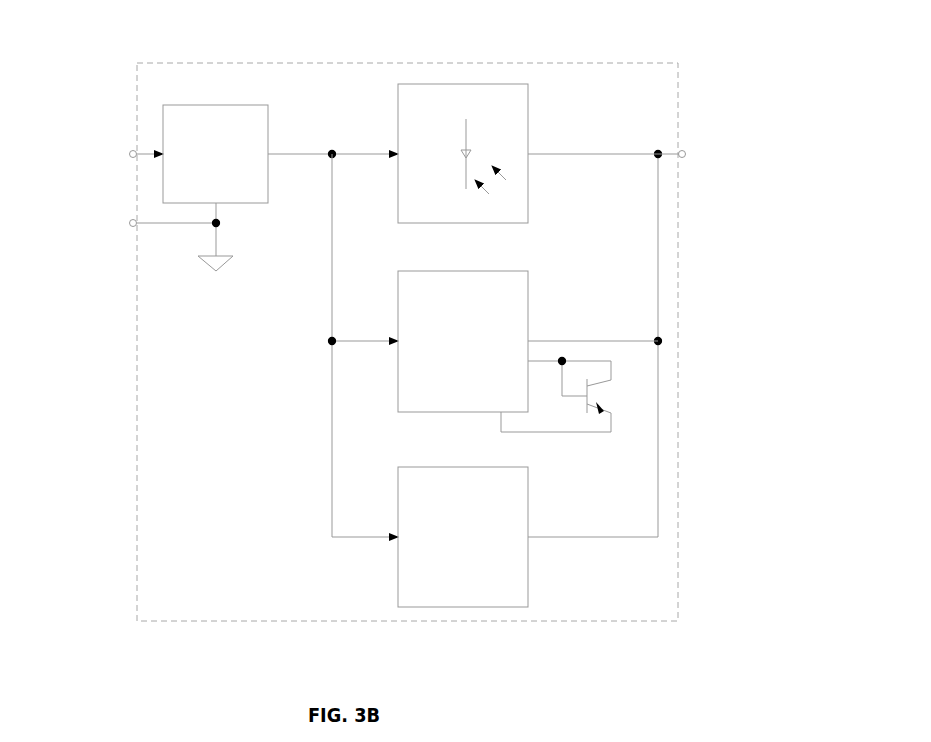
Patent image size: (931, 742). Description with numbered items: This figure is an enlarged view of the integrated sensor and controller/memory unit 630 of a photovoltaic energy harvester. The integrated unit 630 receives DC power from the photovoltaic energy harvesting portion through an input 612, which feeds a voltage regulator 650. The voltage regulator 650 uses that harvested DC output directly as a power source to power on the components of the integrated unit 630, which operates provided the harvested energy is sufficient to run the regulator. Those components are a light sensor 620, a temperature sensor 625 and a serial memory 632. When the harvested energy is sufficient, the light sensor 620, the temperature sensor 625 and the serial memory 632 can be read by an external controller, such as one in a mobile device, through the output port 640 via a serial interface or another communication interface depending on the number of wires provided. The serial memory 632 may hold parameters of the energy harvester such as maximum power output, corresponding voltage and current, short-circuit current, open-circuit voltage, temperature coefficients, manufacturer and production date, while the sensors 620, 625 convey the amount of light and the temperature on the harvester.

The integrated sensor and controller/memory unit 630 is at (400, 63).
The input 612 is at (130, 153).
The voltage regulator 650 is at (250, 130).
The light sensor 620 is at (507, 114).
The temperature sensor 625 is at (506, 309).
The serial memory 632 is at (493, 511).
The output port 640 is at (686, 157).